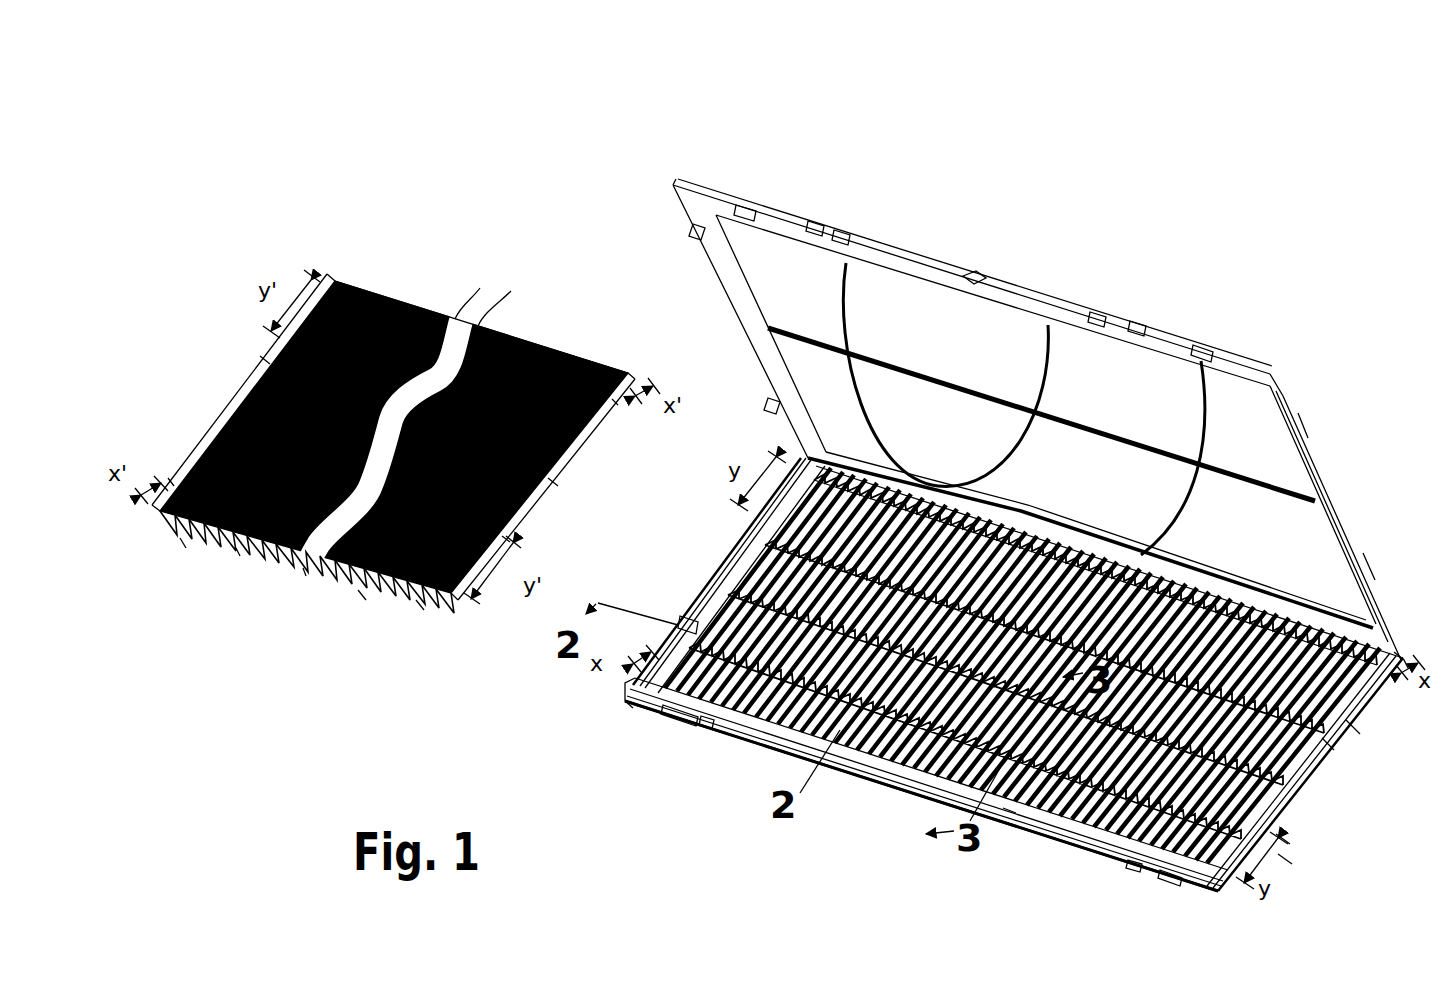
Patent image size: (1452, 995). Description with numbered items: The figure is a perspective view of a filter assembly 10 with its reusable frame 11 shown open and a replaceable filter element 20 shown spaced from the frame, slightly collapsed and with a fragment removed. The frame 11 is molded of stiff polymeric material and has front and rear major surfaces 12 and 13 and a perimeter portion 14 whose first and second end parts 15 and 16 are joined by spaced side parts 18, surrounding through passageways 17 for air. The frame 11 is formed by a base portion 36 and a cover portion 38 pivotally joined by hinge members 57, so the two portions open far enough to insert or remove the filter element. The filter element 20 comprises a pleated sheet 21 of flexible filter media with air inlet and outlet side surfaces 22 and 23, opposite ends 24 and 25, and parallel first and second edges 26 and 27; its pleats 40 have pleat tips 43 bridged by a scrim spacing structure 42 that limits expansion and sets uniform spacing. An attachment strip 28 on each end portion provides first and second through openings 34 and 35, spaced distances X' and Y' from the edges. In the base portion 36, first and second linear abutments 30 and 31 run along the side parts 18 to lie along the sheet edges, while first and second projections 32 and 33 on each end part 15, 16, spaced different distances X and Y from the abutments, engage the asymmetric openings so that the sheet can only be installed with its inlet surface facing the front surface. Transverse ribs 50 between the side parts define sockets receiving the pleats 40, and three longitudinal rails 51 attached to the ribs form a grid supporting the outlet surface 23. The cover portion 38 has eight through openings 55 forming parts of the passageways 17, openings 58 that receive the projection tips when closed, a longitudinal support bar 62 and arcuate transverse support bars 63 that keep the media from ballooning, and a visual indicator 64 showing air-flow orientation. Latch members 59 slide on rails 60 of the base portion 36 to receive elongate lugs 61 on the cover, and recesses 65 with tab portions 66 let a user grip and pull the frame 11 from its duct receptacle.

The filter assembly 10 is at (1075, 208).
The frame 11 is at (1365, 548).
The front major surface 12 is at (1325, 500).
The rear major surface 13 is at (1030, 832).
The perimeter portion 14 is at (1303, 445).
The first end part 15 is at (625, 690).
The second end part 16 is at (1382, 652).
The through passageways 17 is at (835, 745).
The side parts 18 is at (985, 507).
The filter element 20 is at (393, 287).
The sheet of filter media 21 is at (216, 545).
The air inlet side surface 22 is at (498, 318).
The air outlet side surface 23 is at (413, 600).
The first end 24 is at (259, 378).
The second end 25 is at (556, 457).
The first edge 26 is at (297, 568).
The second edge 27 is at (548, 340).
The attachment strip 28 is at (216, 408).
The first linear abutment 30 is at (1090, 842).
The second linear abutment 31 is at (1023, 527).
The first projection 32 is at (645, 640).
The second projection 33 is at (760, 520).
The first through opening 34 is at (165, 478).
The second through opening 35 is at (290, 336).
The base portion 36 is at (1070, 850).
The cover portion 38 is at (900, 242).
The pleats 40 is at (365, 590).
The spacing structure 42 is at (178, 540).
The pleat tips 43 is at (231, 548).
The transverse ribs 50 is at (1010, 802).
The longitudinal rails 51 is at (900, 765).
The through openings 55 is at (940, 334).
The hinge members 57 is at (815, 440).
The openings 58 is at (692, 222).
The latch member 59 is at (670, 712).
The rail 60 is at (697, 720).
The elongate lug 61 is at (737, 201).
The longitudinal support bar 62 is at (970, 388).
The arcuate transverse support bars 63 is at (832, 295).
The visual indicator 64 is at (968, 270).
The recesses 65 is at (808, 216).
The tab portions 66 is at (836, 228).